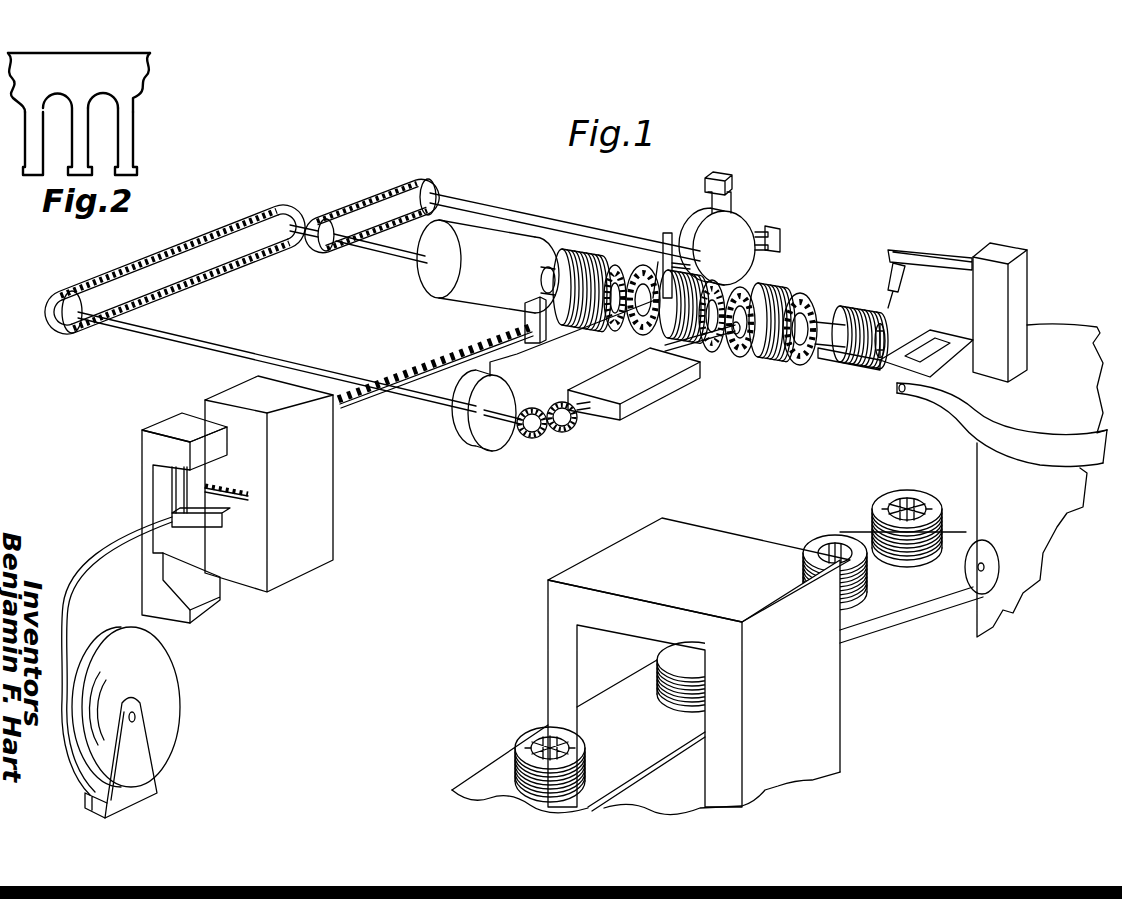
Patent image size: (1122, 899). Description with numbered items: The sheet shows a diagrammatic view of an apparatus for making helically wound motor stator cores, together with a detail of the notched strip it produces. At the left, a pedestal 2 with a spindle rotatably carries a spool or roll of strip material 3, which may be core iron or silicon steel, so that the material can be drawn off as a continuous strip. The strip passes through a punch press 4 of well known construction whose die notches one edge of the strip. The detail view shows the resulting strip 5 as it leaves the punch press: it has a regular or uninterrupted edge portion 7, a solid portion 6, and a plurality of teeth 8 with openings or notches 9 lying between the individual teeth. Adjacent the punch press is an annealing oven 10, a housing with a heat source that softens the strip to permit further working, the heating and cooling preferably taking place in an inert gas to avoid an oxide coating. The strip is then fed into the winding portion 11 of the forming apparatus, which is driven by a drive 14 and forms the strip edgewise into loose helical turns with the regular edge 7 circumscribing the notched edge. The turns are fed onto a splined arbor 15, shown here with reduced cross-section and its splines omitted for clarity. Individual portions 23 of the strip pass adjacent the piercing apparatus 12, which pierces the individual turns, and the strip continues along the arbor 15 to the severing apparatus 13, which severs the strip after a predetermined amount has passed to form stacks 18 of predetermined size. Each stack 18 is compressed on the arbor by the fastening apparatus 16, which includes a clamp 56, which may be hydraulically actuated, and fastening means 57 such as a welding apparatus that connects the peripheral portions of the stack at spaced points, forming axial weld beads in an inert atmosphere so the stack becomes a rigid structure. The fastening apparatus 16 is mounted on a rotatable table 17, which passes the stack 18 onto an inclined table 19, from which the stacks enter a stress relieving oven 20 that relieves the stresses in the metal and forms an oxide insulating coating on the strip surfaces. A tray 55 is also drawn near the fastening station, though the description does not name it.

In FIG. 1, the pedestal 2 is at (150, 783).
In FIG. 1, the spool or roll of strip material 3 is at (162, 700).
In FIG. 1, the punch press 4 is at (148, 487).
In FIG. 2, the strip 5 is at (103, 47).
In FIG. 1, the strip 5 is at (358, 408).
In FIG. 2, the solid portion 6 is at (110, 73).
In FIG. 2, the regular or uninterrupted edge portion 7 is at (43, 53).
In FIG. 2, the teeth 8 is at (77, 130).
In FIG. 2, the openings or notches 9 is at (105, 137).
In FIG. 1, the annealing oven 10 is at (235, 393).
In FIG. 1, the winding portion 11 is at (562, 250).
In FIG. 1, the piercing apparatus 12 is at (657, 260).
In FIG. 1, the severing apparatus 13 is at (732, 352).
In FIG. 1, the drive 14 is at (488, 266).
In FIG. 1, the splined arbor 15 is at (606, 313).
In FIG. 1, the fastening apparatus 16 is at (926, 256).
In FIG. 1, the rotatable table 17 is at (1057, 335).
In FIG. 1, the stacks 18 is at (862, 312).
In FIG. 1, the inclined table 19 is at (908, 575).
In FIG. 1, the stress relieving oven 20 is at (705, 546).
In FIG. 1, the individual portions of the strip 23 is at (628, 326).
In FIG. 1, the tray 55 is at (888, 347).
In FIG. 1, the clamp 56 is at (845, 372).
In FIG. 1, the fastening means 57 is at (897, 312).